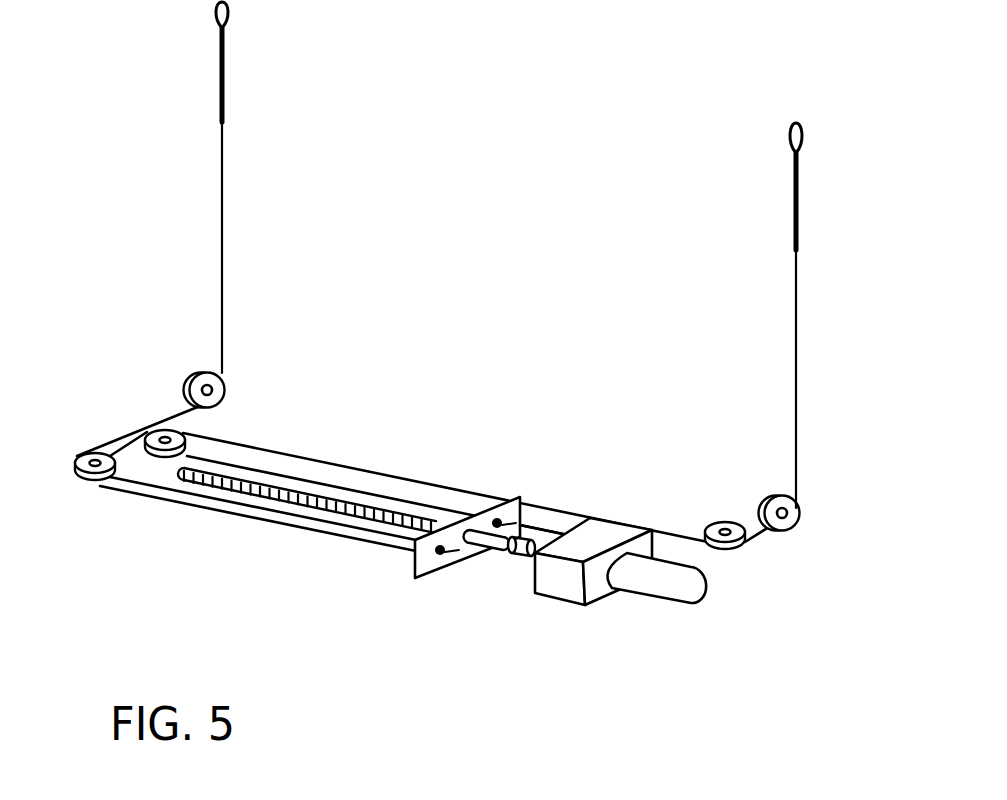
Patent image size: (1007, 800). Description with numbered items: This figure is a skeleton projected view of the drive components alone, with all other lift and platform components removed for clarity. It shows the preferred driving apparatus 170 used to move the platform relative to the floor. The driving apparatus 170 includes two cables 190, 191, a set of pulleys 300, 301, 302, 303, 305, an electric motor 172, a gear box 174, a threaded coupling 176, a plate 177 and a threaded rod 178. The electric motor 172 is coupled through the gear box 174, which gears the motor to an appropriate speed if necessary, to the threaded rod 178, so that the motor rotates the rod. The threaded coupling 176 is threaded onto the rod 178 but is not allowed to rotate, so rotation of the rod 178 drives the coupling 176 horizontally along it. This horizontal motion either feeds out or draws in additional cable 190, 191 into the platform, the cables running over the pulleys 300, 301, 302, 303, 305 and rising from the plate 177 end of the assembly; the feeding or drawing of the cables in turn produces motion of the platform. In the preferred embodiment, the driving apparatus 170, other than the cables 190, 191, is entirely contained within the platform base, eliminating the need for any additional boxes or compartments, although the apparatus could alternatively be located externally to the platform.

The driving apparatus 170 is at (692, 648).
The electric motor 172 is at (654, 578).
The gear box 174 is at (556, 572).
The threaded coupling 176 is at (488, 552).
The plate 177 is at (417, 572).
The threaded rod 178 is at (262, 492).
The cable 190 is at (797, 363).
The cable 191 is at (222, 122).
The pulley 300 is at (790, 514).
The pulley 301 is at (193, 380).
The pulley 302 is at (736, 547).
The pulley 303 is at (152, 437).
The pulley 305 is at (88, 478).